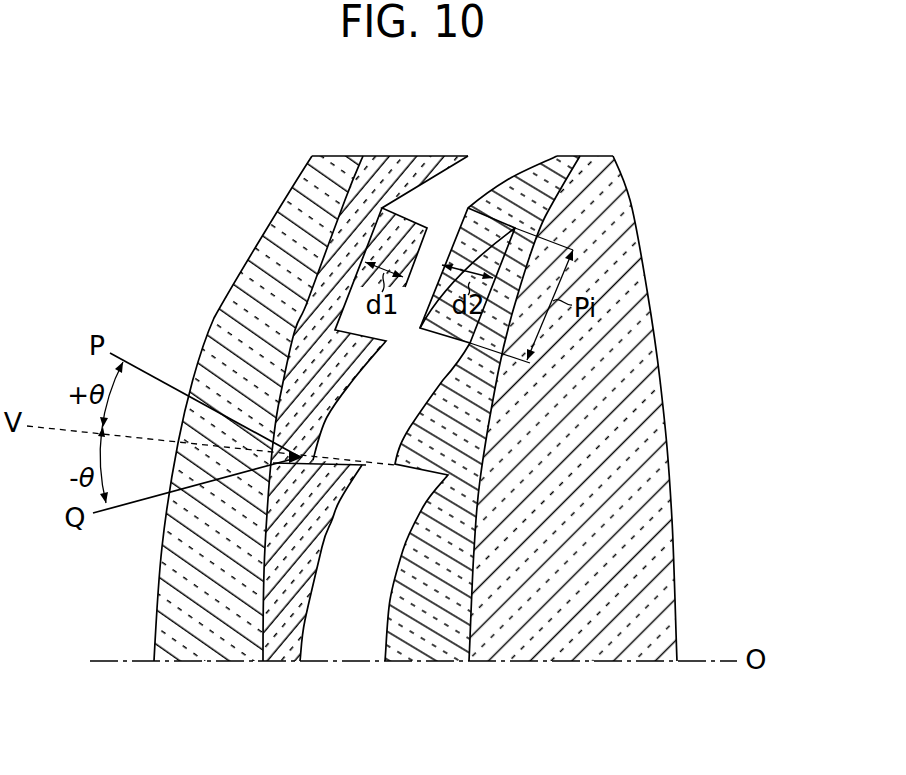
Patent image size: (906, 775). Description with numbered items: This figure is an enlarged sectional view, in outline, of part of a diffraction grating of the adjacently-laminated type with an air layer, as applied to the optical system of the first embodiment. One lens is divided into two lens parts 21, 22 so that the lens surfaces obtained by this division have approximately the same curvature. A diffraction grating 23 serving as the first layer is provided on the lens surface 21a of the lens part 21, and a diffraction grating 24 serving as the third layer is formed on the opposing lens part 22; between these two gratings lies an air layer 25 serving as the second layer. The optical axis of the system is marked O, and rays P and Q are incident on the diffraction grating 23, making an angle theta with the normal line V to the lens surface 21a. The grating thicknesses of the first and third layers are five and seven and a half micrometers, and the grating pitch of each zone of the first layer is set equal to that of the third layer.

The lens part 21 is at (254, 249).
The lens surface 21a is at (312, 197).
The lens part 22 is at (640, 238).
The diffraction grating serving as a first layer 23 is at (410, 157).
The diffraction grating serving as a third layer 24 is at (563, 167).
The air layer 25 is at (488, 171).